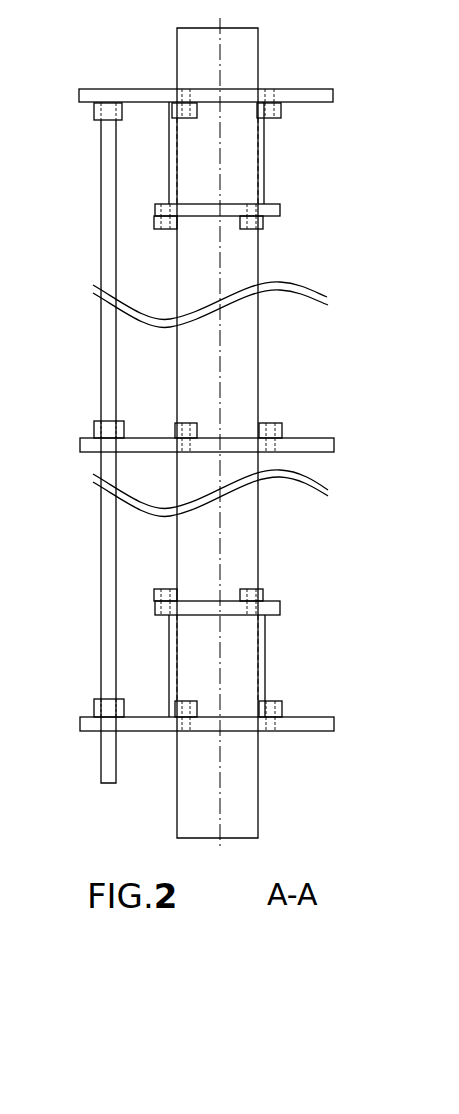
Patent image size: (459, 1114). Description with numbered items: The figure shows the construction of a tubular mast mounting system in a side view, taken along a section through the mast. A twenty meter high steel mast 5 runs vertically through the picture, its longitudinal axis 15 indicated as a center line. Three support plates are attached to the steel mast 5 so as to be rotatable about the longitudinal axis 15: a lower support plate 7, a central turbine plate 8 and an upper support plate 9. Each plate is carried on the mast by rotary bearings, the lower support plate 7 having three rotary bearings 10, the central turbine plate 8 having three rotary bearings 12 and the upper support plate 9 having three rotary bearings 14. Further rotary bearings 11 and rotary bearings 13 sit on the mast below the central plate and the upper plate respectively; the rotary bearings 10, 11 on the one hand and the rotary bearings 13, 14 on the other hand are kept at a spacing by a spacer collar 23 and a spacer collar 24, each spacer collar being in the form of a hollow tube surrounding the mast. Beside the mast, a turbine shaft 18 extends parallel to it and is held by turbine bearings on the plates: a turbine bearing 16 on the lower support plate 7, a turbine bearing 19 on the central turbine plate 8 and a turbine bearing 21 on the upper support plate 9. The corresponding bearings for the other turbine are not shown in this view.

The steel mast 5 is at (258, 520).
The longitudinal axis 15 is at (220, 351).
The lower support plate 7 is at (88, 724).
The central turbine plate 8 is at (87, 447).
The upper support plate 9 is at (83, 91).
The rotary bearings 10 is at (177, 699).
The rotary bearings 11 is at (162, 588).
The rotary bearings 12 is at (183, 423).
The rotary bearings 13 is at (166, 231).
The rotary bearings 14 is at (175, 117).
The turbine bearing 16 is at (95, 700).
The turbine shaft 18 is at (107, 770).
The turbine bearing 19 is at (97, 422).
The turbine bearing 21 is at (108, 110).
The spacer collar 23 is at (171, 640).
The spacer collar 24 is at (170, 156).